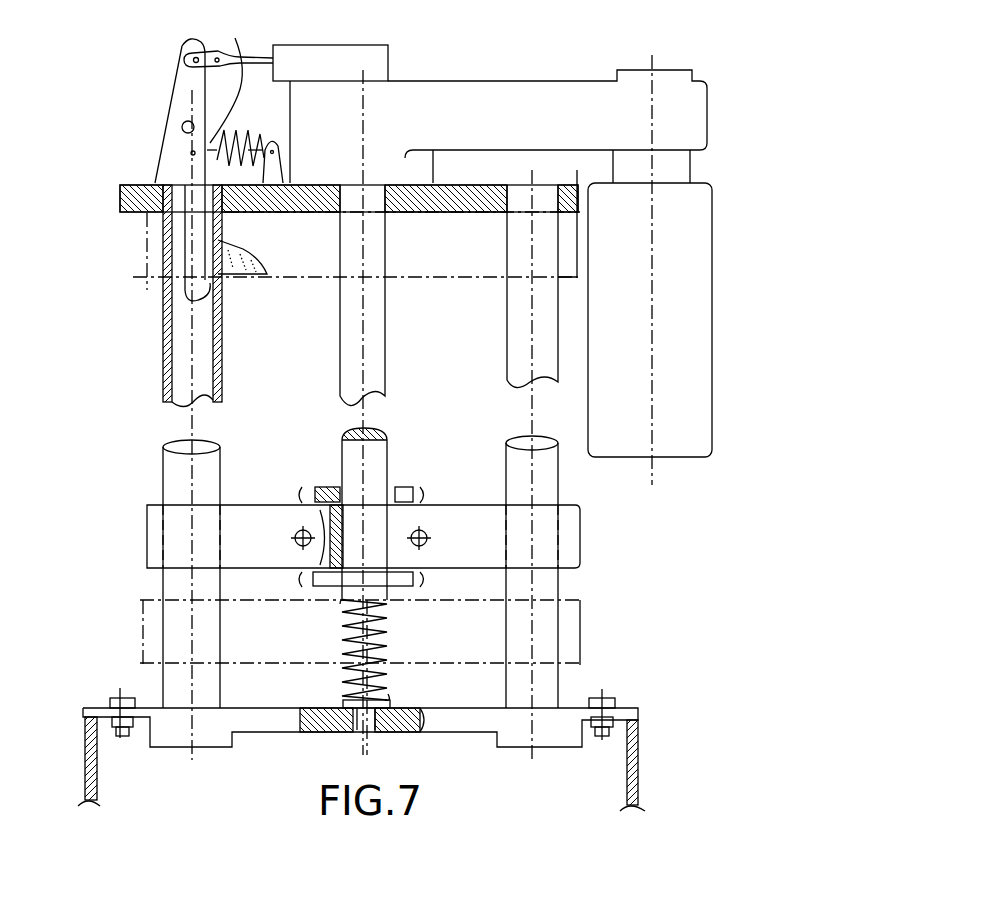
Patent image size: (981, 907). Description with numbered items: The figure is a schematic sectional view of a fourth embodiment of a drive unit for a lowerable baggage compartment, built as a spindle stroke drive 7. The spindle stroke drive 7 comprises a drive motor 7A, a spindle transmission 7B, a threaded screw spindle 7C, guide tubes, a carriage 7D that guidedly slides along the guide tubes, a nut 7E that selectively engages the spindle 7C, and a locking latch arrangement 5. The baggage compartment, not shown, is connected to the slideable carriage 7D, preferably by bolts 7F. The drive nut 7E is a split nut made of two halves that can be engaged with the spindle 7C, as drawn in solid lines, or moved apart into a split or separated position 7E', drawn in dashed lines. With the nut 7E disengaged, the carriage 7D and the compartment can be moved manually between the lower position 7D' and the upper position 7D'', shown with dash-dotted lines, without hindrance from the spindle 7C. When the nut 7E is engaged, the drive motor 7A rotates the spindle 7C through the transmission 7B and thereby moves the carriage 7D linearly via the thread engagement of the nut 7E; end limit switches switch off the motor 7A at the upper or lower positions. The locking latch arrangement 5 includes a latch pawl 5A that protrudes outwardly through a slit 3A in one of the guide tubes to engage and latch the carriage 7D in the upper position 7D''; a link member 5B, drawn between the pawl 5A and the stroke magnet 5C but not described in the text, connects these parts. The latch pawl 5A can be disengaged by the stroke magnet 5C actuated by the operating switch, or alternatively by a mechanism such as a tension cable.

The locking latch arrangement 5 is at (124, 105).
The latch pawl 5A is at (192, 177).
The link 5B is at (228, 36).
The stroke magnet 5C is at (323, 60).
The spindle stroke drive 7 is at (760, 492).
The drive motor 7A is at (693, 341).
The spindle transmission 7B is at (543, 104).
The threaded screw spindle 7C is at (352, 446).
The carriage 7D is at (396, 557).
The lower position 7D' is at (415, 705).
The upper position 7D'' is at (383, 223).
The drive nut 7E is at (377, 514).
The split or separated position 7E' is at (402, 650).
The bolts 7F is at (115, 699).
The slit 3A is at (230, 304).